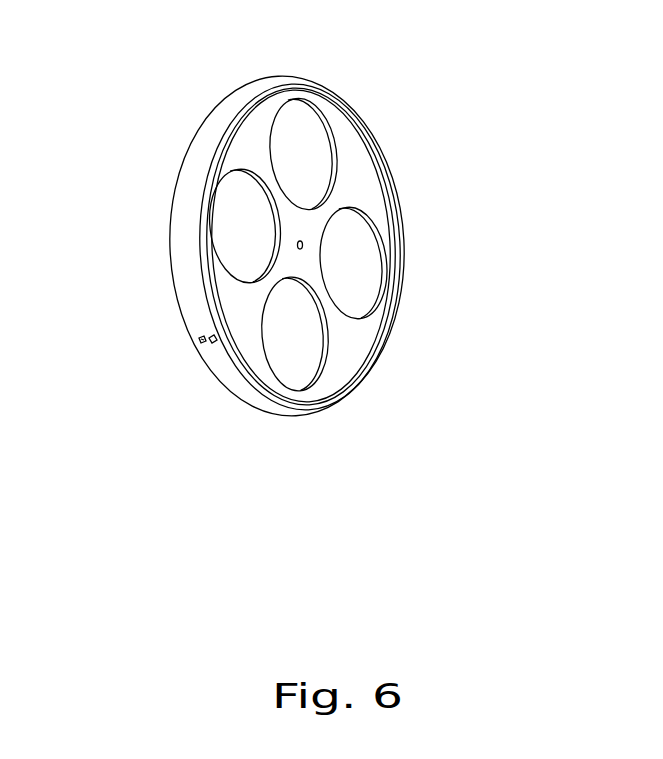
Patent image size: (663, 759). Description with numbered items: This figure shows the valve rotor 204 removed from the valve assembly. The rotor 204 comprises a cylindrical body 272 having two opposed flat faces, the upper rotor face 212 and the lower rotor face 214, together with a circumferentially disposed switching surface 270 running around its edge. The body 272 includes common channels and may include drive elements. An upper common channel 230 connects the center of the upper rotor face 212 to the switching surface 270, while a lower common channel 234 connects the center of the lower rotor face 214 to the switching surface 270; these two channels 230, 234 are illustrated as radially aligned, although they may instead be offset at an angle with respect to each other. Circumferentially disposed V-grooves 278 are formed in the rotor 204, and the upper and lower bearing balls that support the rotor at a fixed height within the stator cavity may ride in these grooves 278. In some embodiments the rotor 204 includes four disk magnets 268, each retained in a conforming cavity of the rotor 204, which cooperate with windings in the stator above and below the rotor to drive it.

The rotor 204 is at (438, 420).
The lower rotor face 214 is at (190, 121).
The upper rotor face 212 is at (250, 127).
The switching surface 270 is at (185, 223).
The cylindrical body 272 is at (235, 301).
The V-grooves 278 is at (380, 162).
The disk magnets 268 is at (358, 272).
The lower common channel 234 is at (198, 340).
The upper common channel 230 is at (213, 343).